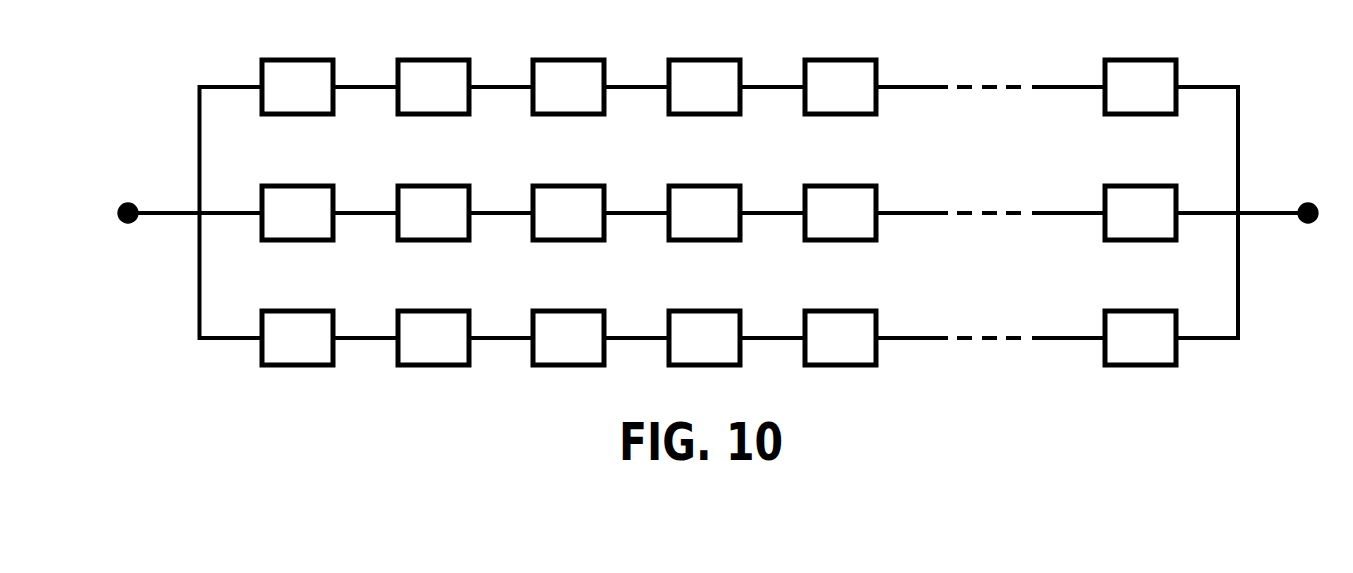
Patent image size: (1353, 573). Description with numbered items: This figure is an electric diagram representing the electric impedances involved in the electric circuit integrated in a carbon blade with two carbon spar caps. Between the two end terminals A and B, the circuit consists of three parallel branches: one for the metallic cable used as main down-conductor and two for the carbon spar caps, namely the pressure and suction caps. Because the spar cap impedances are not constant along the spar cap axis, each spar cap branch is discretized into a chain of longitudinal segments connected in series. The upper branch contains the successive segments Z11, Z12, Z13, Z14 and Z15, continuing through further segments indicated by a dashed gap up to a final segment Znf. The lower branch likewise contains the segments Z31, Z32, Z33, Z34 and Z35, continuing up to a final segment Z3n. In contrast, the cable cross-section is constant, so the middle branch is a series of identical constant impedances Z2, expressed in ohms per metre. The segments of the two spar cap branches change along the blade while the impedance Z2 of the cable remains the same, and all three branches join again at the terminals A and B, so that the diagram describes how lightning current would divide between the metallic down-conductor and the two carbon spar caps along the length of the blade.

The terminal A is at (112, 214).
The terminal B is at (1325, 214).
The longitudinal segment of impedance Z1 Z11 is at (297, 87).
The longitudinal segment of impedance Z1 Z12 is at (433, 87).
The longitudinal segment of impedance Z1 Z13 is at (568, 87).
The longitudinal segment of impedance Z1 Z14 is at (704, 87).
The longitudinal segment of impedance Z1 Z15 is at (840, 87).
The final longitudinal segment of impedance Z1 Znf is at (1140, 87).
The impedance of the metallic cable Z2 is at (719, 213).
The longitudinal segment of impedance Z3 Z31 is at (297, 338).
The longitudinal segment of impedance Z3 Z32 is at (433, 338).
The longitudinal segment of impedance Z3 Z33 is at (568, 338).
The longitudinal segment of impedance Z3 Z34 is at (704, 338).
The longitudinal segment of impedance Z3 Z35 is at (840, 338).
The final longitudinal segment of impedance Z3 Z3n is at (1140, 338).